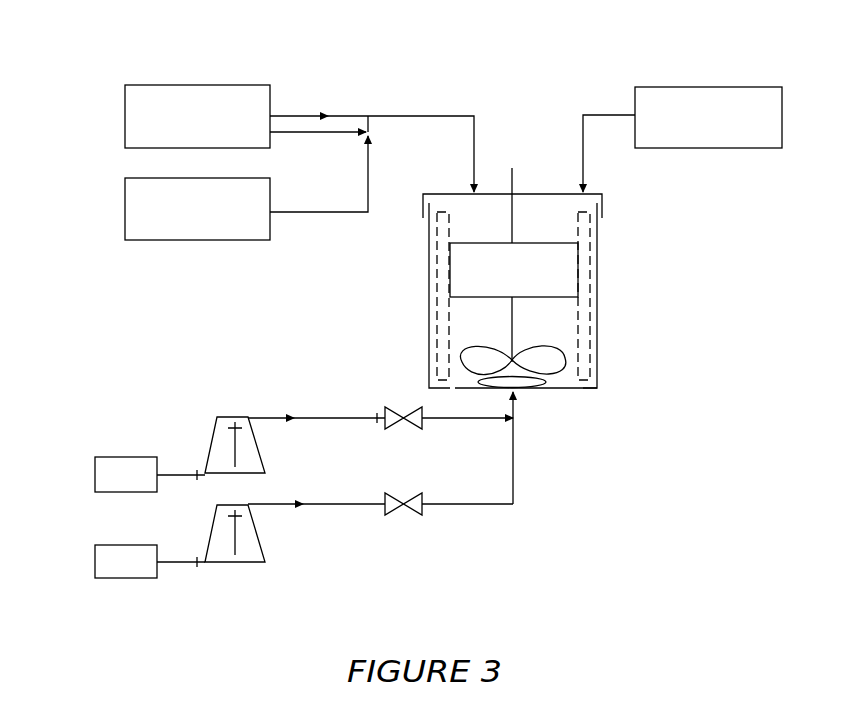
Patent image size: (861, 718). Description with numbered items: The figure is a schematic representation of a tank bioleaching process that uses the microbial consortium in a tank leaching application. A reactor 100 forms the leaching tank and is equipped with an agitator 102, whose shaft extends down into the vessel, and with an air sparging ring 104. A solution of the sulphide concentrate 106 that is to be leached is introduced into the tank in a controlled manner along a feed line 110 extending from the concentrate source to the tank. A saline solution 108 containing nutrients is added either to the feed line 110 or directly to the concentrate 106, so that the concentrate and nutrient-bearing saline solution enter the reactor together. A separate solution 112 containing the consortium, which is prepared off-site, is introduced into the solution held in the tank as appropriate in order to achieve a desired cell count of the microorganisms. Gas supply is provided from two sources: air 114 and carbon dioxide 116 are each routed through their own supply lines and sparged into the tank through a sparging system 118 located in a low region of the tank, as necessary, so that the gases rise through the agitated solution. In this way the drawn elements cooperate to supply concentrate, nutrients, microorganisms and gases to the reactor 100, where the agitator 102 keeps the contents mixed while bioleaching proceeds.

The reactor 100 is at (597, 273).
The agitator 102 is at (513, 322).
The air sparging ring 104 is at (587, 392).
The sulphide concentrate 106 is at (242, 85).
The saline solution 108 is at (253, 240).
The feed line 110 is at (457, 115).
The consortium solution 112 is at (745, 87).
The air 114 is at (113, 457).
The carbon dioxide 116 is at (97, 545).
The sparging system 118 is at (522, 382).